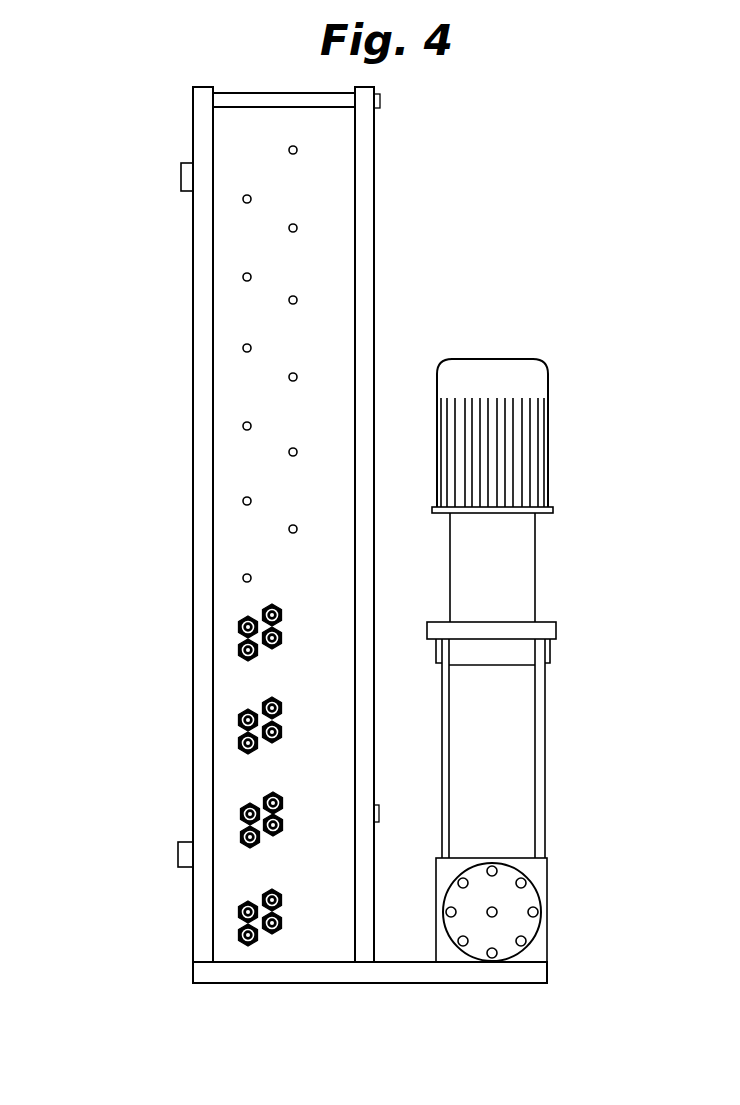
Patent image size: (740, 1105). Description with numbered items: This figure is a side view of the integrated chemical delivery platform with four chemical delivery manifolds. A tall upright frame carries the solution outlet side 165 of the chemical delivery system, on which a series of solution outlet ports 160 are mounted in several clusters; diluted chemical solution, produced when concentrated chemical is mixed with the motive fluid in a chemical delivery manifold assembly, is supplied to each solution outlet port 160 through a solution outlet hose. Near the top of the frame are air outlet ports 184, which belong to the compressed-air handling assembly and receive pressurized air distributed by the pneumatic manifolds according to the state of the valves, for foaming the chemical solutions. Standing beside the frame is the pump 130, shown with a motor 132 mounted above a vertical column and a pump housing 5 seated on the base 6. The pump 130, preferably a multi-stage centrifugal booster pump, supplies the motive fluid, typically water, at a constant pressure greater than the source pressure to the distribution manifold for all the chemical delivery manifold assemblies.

The air outlet ports 184 is at (230, 178).
The solution outlet side 165 is at (238, 543).
The solution outlet port 160 is at (241, 655).
The motor 132 is at (507, 359).
The pump 130 is at (520, 752).
The pump housing 5 is at (450, 912).
The base 6 is at (193, 983).